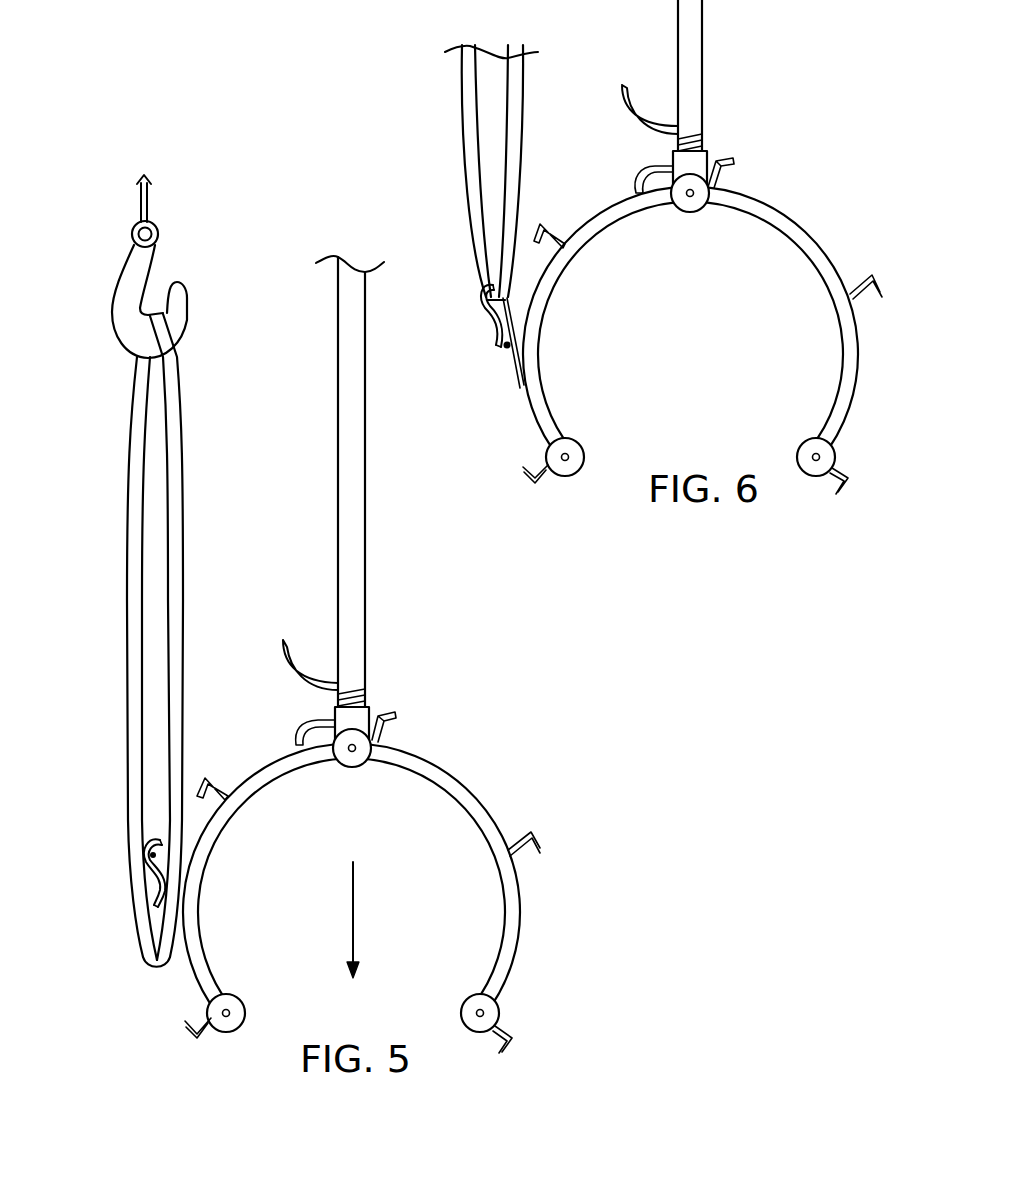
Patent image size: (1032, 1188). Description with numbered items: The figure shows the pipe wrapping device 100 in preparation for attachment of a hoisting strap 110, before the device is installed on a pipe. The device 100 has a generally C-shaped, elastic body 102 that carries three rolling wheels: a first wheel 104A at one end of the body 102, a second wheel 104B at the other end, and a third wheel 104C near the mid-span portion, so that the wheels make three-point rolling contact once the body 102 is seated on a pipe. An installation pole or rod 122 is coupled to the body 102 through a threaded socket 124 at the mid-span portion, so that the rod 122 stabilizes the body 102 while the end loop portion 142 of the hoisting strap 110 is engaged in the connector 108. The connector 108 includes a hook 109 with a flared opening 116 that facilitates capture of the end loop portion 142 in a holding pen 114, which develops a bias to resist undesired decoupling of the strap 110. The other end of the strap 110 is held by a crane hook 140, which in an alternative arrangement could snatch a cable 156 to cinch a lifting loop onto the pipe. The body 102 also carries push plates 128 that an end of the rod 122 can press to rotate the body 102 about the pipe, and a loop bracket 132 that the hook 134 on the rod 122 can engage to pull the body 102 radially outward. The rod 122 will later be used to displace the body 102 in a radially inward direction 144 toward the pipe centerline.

In FIG. 5, the pipe wrapping device 100 is at (470, 722).
In FIG. 6, the pipe wrapping device 100 is at (810, 199).
In FIG. 5, the C-shaped body 102 is at (488, 818).
In FIG. 6, the C-shaped body 102 is at (860, 361).
In FIG. 5, the first wheel 104A is at (495, 1010).
In FIG. 6, the first wheel 104A is at (815, 440).
In FIG. 5, the second wheel 104B is at (258, 969).
In FIG. 6, the second wheel 104B is at (567, 440).
In FIG. 5, the third wheel 104C is at (350, 758).
In FIG. 6, the third wheel 104C is at (690, 204).
In FIG. 5, the connector 108 is at (136, 590).
In FIG. 5, the hook 109 is at (142, 857).
In FIG. 6, the hook 109 is at (493, 340).
In FIG. 5, the hoisting strap 110 is at (130, 581).
In FIG. 6, the hoisting strap 110 is at (470, 118).
In FIG. 5, the holding pen 114 is at (103, 816).
In FIG. 6, the flared opening 116 is at (506, 350).
In FIG. 5, the pole or rod 122 is at (345, 429).
In FIG. 6, the pole or rod 122 is at (695, 22).
In FIG. 5, the threaded socket 124 is at (365, 725).
In FIG. 6, the threaded socket 124 is at (706, 160).
In FIG. 5, the push plate 128 is at (218, 778).
In FIG. 6, the push plate 128 is at (878, 275).
In FIG. 5, the loop bracket 132 is at (315, 732).
In FIG. 6, the loop bracket 132 is at (660, 167).
In FIG. 5, the hook 134 is at (318, 667).
In FIG. 6, the hook 134 is at (652, 127).
In FIG. 5, the crane hook 140 is at (143, 277).
In FIG. 5, the end loop portion 142 is at (136, 639).
In FIG. 6, the end loop portion 142 is at (443, 237).
In FIG. 5, the radially inward direction 144 is at (355, 918).
In FIG. 5, the cable 156 is at (141, 197).